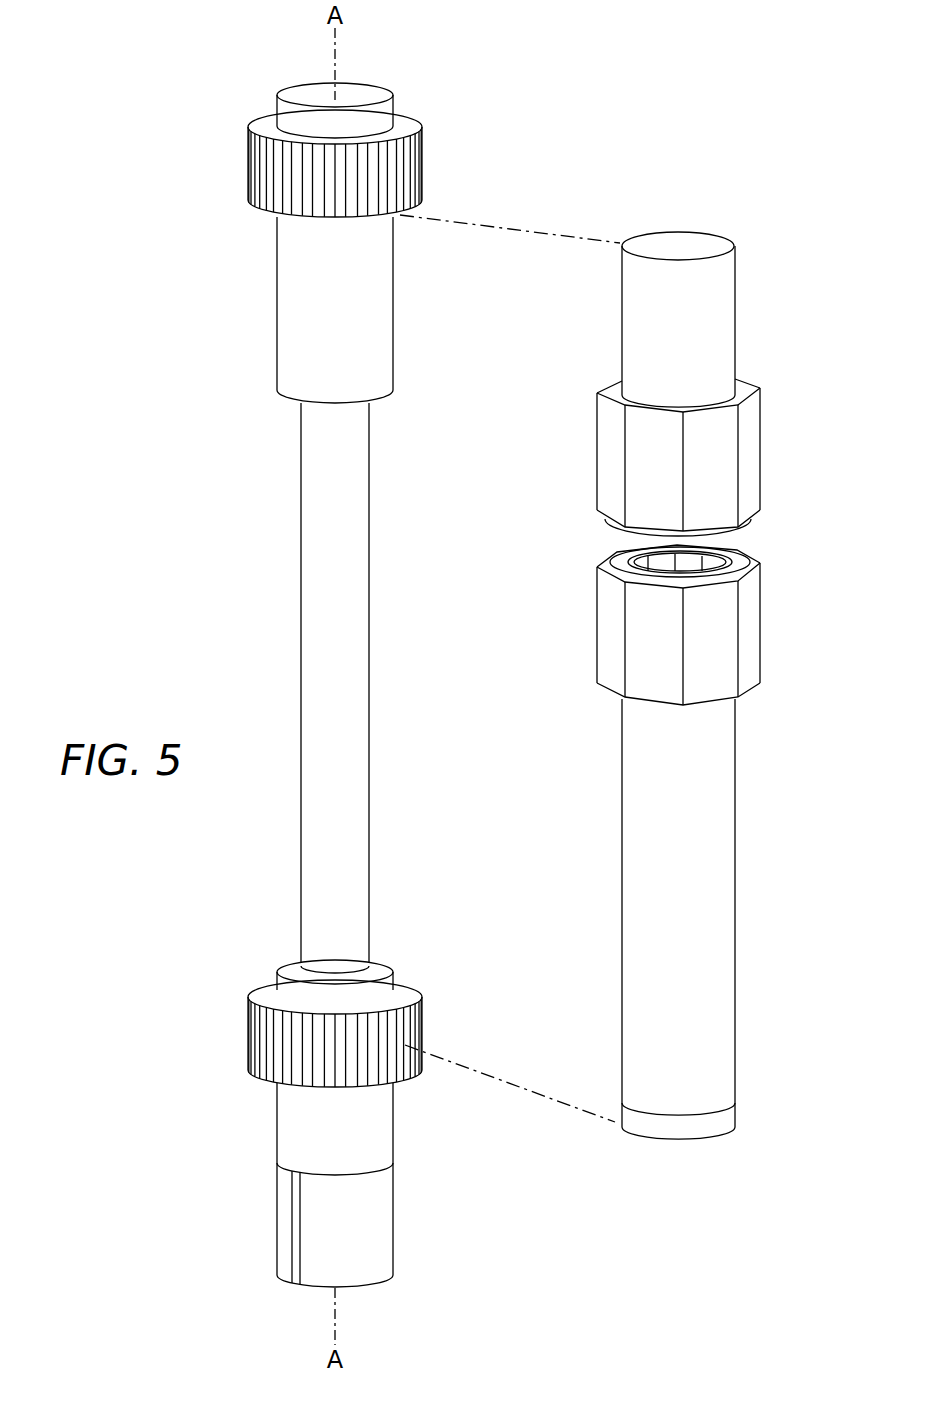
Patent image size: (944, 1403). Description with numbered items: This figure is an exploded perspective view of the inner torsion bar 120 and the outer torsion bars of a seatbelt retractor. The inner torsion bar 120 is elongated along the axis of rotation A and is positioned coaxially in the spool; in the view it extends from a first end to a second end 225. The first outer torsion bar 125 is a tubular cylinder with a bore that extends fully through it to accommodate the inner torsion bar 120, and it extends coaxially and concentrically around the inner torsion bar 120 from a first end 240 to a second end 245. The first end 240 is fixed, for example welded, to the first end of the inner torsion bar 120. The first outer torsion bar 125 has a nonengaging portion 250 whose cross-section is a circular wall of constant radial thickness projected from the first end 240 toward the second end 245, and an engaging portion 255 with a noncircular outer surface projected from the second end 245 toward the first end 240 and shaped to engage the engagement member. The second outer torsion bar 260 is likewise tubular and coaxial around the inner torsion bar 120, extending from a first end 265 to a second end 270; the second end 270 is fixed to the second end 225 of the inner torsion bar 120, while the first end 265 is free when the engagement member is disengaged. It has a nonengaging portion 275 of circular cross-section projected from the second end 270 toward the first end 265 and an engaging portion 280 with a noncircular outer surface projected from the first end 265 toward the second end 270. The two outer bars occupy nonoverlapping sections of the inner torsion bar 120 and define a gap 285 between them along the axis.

The inner torsion bar 120 is at (300, 538).
The first outer torsion bar 125 is at (677, 919).
The second end of the inner torsion bar 225 is at (250, 150).
The first end of the first outer torsion bar 240 is at (737, 1127).
The second end of the first outer torsion bar 245 is at (760, 560).
The nonengaging portion 250 is at (622, 833).
The engaging portion 255 is at (679, 625).
The second outer torsion bar 260 is at (677, 288).
The first end of the second outer torsion bar 265 is at (760, 510).
The second end of the second outer torsion bar 270 is at (705, 232).
The nonengaging portion 275 is at (620, 330).
The engaging portion 280 is at (679, 457).
The gap 285 is at (605, 540).